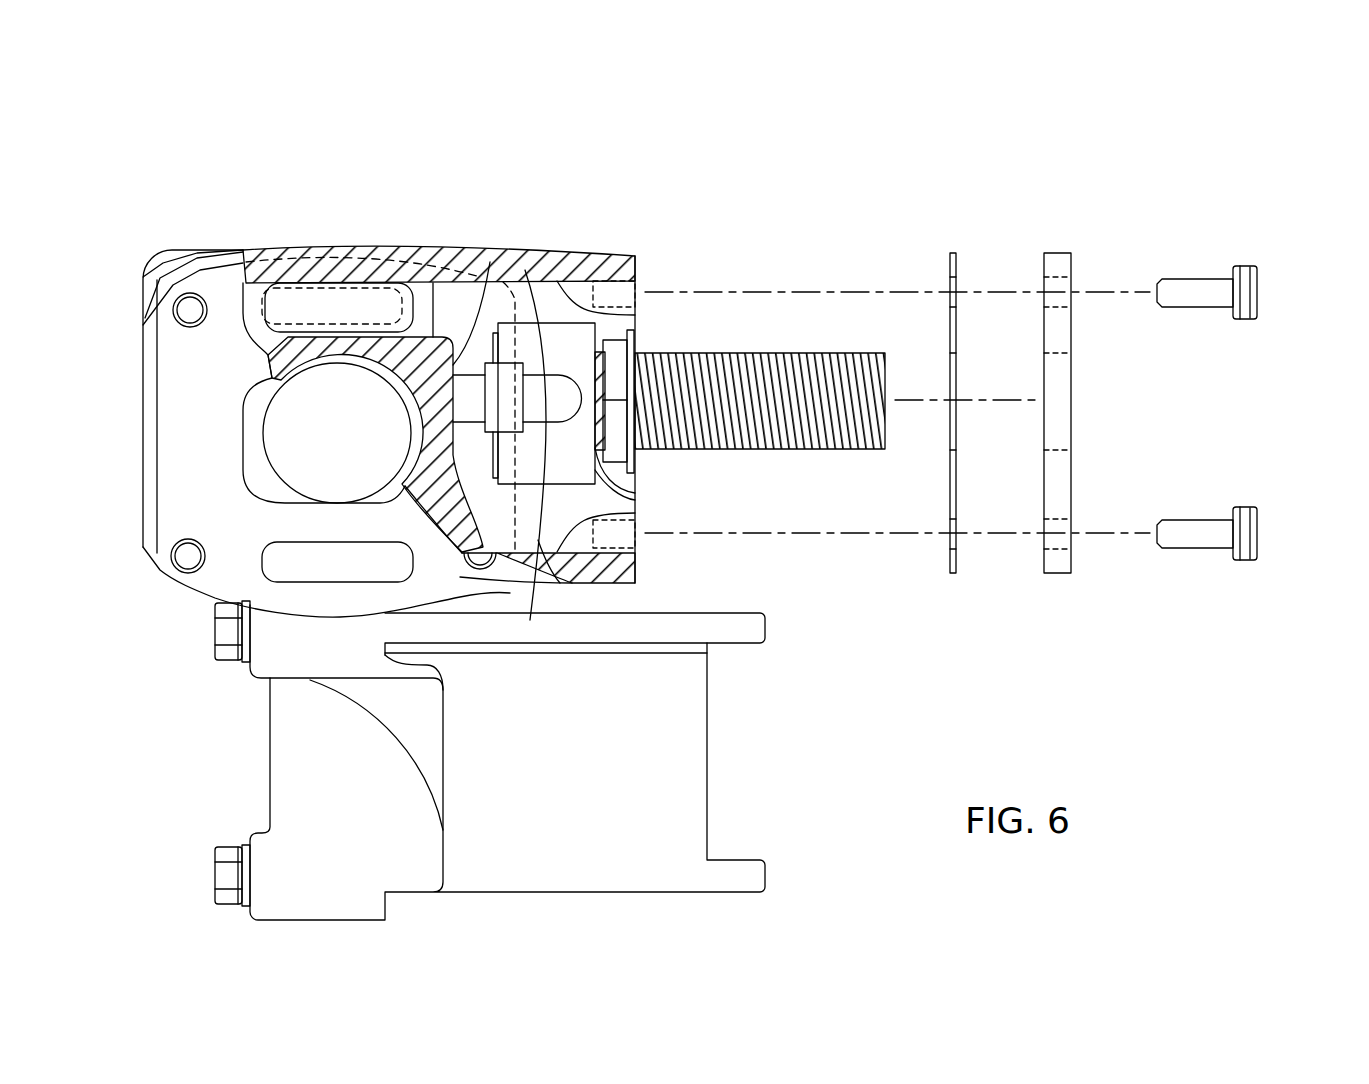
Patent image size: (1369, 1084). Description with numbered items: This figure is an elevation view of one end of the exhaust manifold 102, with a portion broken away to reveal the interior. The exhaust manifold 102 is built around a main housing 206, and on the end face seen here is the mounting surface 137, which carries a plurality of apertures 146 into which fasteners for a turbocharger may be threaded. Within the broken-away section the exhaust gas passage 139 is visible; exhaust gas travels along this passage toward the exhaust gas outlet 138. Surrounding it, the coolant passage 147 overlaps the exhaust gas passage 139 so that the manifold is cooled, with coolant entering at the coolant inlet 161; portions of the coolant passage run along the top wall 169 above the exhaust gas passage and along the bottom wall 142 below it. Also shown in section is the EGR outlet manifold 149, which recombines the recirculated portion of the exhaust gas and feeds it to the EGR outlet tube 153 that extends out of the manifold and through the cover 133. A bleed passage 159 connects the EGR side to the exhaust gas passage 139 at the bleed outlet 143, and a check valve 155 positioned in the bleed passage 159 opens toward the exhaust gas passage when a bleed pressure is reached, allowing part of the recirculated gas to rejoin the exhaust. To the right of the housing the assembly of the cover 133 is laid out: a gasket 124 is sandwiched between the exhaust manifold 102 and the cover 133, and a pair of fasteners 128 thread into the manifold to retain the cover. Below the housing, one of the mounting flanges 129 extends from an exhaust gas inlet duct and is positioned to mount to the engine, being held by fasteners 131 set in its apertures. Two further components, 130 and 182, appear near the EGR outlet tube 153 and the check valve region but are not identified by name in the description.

The exhaust manifold 102 is at (343, 153).
The main housing 206 is at (380, 221).
The gasket 124 is at (950, 262).
The fasteners 128 is at (1257, 287).
The mounting flanges 129 is at (707, 745).
The pin 130 is at (620, 352).
The fasteners 131 is at (215, 642).
The cover 133 is at (1044, 260).
The mounting surface 137 is at (219, 392).
The exhaust gas outlet 138 is at (243, 450).
The exhaust gas passage 139 is at (357, 451).
The bottom wall 142 is at (637, 568).
The bleed outlet 143 is at (490, 262).
The apertures 146 is at (180, 298).
The coolant passage 147 is at (352, 316).
The EGR outlet manifold 149 is at (600, 485).
The EGR outlet tube 153 is at (840, 355).
The check valve 155 is at (523, 270).
The bleed passage 159 is at (530, 620).
The coolant inlet 161 is at (282, 247).
The top wall 169 is at (615, 256).
The washer plate 182 is at (634, 483).